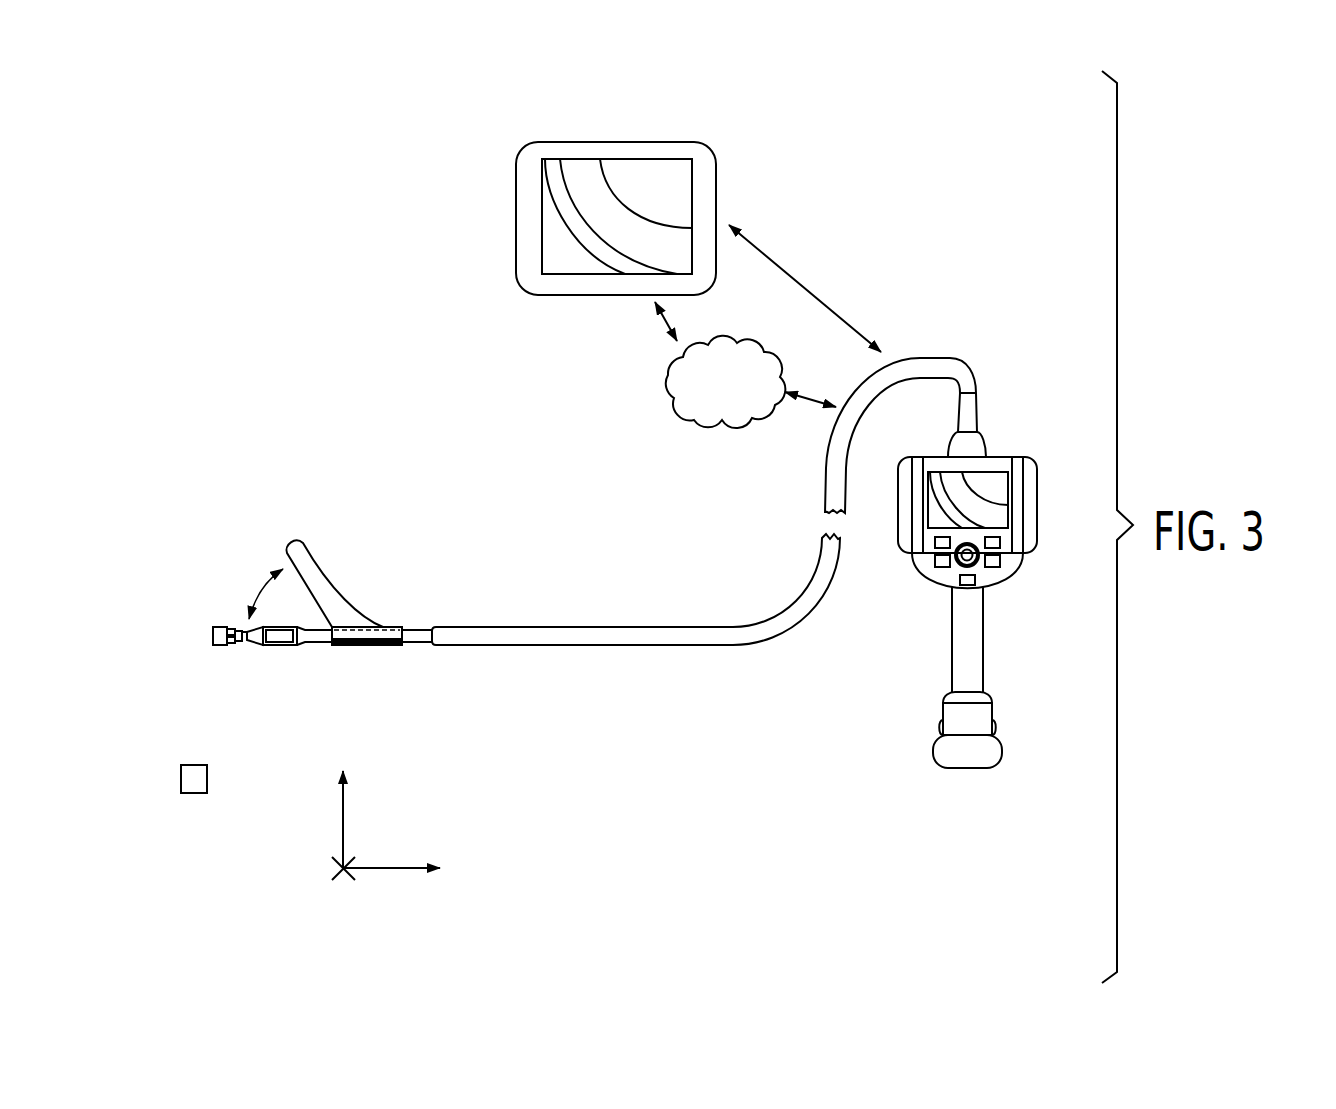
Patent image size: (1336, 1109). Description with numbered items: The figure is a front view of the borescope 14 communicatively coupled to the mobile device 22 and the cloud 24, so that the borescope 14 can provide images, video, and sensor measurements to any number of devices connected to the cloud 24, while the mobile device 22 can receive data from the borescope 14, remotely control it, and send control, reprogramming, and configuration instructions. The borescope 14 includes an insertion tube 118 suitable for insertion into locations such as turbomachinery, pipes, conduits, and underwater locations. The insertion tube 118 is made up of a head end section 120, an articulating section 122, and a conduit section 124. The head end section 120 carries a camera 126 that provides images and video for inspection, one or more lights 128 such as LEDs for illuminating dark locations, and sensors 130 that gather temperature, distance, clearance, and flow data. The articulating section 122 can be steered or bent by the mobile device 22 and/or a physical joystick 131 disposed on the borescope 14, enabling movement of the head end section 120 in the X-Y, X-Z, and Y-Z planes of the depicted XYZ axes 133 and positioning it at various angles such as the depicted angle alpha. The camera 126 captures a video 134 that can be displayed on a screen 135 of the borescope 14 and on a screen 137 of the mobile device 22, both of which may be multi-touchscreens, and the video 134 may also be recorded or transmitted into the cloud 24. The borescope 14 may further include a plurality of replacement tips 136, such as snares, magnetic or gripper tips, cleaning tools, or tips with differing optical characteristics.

The borescope 14 is at (983, 600).
The mobile device 22 is at (751, 307).
The cloud 24 is at (685, 427).
The insertion tube 118 is at (556, 615).
The head end section 120 is at (323, 660).
The articulating section 122 is at (407, 660).
The conduit section 124 is at (829, 660).
The camera 126 is at (247, 622).
The lights 128 is at (242, 630).
The sensors 130 is at (280, 637).
The physical joystick 131 is at (960, 566).
The XYZ axes 133 is at (368, 882).
The video 134 is at (543, 215).
The screen 135 is at (1018, 512).
The replacement tips 136 is at (212, 653).
The screen 137 is at (700, 215).